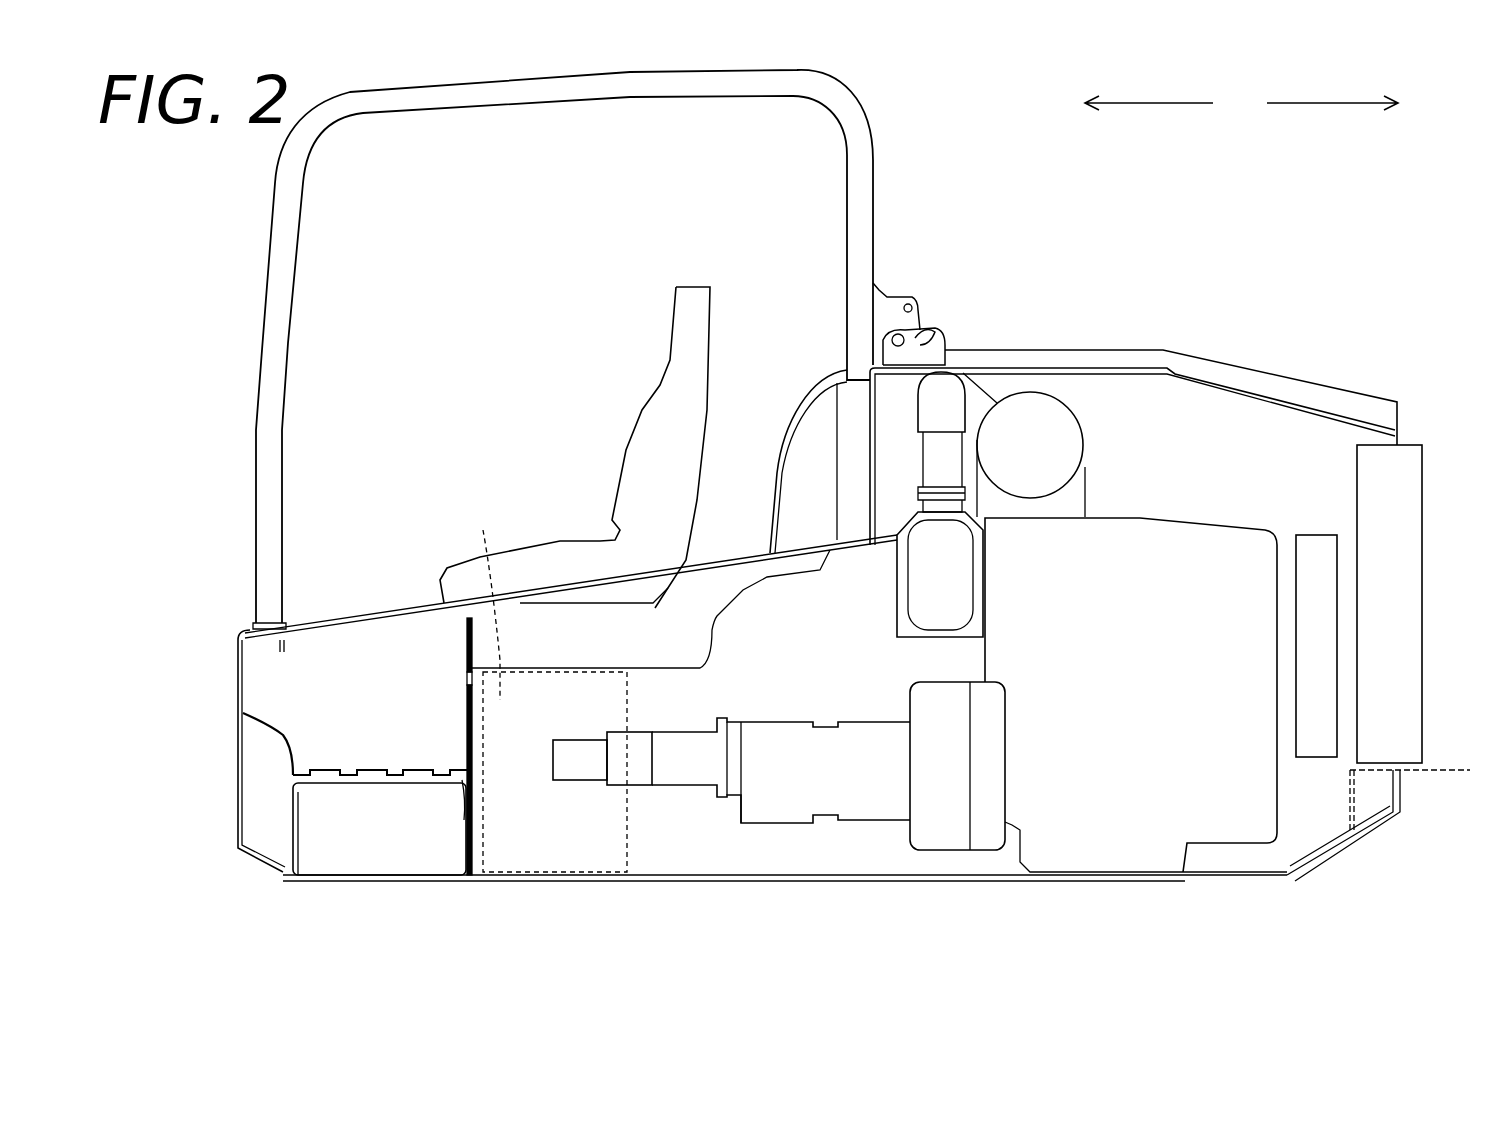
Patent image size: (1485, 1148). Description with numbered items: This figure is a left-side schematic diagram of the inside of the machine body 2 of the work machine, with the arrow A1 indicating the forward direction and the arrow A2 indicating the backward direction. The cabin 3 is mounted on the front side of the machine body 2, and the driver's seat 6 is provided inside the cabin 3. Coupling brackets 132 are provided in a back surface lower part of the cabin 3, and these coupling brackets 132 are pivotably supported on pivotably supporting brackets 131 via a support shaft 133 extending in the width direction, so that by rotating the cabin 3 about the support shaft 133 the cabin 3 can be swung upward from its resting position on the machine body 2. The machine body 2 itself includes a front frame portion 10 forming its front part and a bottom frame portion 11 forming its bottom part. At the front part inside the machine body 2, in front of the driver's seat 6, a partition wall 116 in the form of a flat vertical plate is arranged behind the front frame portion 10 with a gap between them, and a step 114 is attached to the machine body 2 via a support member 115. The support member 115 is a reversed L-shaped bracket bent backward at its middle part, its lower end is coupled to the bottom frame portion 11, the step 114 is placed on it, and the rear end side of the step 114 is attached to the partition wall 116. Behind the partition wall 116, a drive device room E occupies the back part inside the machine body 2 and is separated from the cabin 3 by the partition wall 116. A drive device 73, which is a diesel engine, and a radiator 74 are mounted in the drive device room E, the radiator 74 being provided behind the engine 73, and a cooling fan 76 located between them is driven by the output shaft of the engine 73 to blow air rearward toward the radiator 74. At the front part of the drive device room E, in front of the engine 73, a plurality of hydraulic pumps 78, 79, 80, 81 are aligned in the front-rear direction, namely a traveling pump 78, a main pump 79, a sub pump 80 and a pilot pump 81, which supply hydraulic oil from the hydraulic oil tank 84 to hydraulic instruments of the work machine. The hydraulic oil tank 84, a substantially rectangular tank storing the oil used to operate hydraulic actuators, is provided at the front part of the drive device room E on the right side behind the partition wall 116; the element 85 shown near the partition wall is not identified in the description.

The machine body 2 is at (1087, 287).
The cabin 3 is at (891, 105).
The driver's seat 6 is at (700, 286).
The front frame portion 10 is at (237, 677).
The bottom frame portion 11 is at (1165, 889).
The drive device 73 is at (1185, 503).
The radiator 74 is at (1422, 470).
The cooling fan 76 is at (1324, 522).
The hydraulic pump 78 is at (880, 822).
The hydraulic pump 79 is at (688, 785).
The hydraulic pump 80 is at (623, 785).
The hydraulic pump 81 is at (580, 783).
The hydraulic oil tank 84 is at (483, 603).
The partition plate 85 is at (500, 700).
The step 114 is at (372, 775).
The support member 115 is at (347, 785).
The partition wall 116 is at (466, 815).
The pivotably supporting bracket 131 is at (937, 333).
The coupling bracket 132 is at (890, 297).
The support shaft 133 is at (922, 327).
The drive device room E is at (1234, 391).
The arrow A1 is at (1165, 103).
The arrow A2 is at (1328, 103).